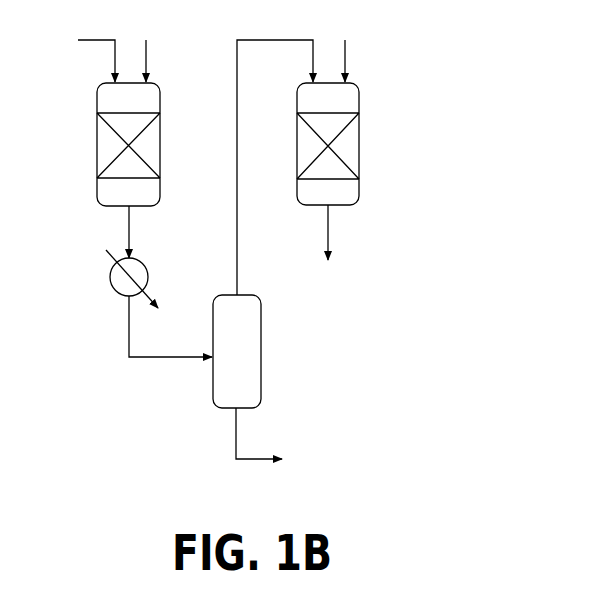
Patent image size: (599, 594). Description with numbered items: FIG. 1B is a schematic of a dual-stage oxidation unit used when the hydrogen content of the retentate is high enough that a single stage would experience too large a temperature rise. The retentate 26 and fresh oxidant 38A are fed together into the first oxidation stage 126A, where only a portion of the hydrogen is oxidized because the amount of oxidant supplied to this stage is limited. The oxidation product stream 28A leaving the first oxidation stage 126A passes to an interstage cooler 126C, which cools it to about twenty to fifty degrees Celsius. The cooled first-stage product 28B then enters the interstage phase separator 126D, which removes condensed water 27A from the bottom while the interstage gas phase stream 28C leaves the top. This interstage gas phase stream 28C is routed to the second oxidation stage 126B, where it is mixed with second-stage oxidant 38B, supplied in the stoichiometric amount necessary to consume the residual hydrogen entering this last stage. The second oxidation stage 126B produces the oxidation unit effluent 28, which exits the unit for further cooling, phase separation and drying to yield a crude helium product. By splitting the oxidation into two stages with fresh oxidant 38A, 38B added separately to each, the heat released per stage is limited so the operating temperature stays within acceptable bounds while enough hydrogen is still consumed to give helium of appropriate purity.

The fresh oxidant 38A is at (96, 48).
The retentate 26 is at (147, 48).
The first oxidation stage 126A is at (128, 144).
The oxidation product stream 28A is at (148, 232).
The interstage cooler 126C is at (117, 285).
The cooled first-stage product 28B is at (170, 326).
The interstage phase separator 126D is at (237, 351).
The condensed water 27A is at (259, 451).
The interstage gas phase stream 28C is at (275, 167).
The second-stage oxidant 38B is at (352, 47).
The second oxidation stage 126B is at (328, 144).
The oxidation unit effluent 28 is at (341, 232).